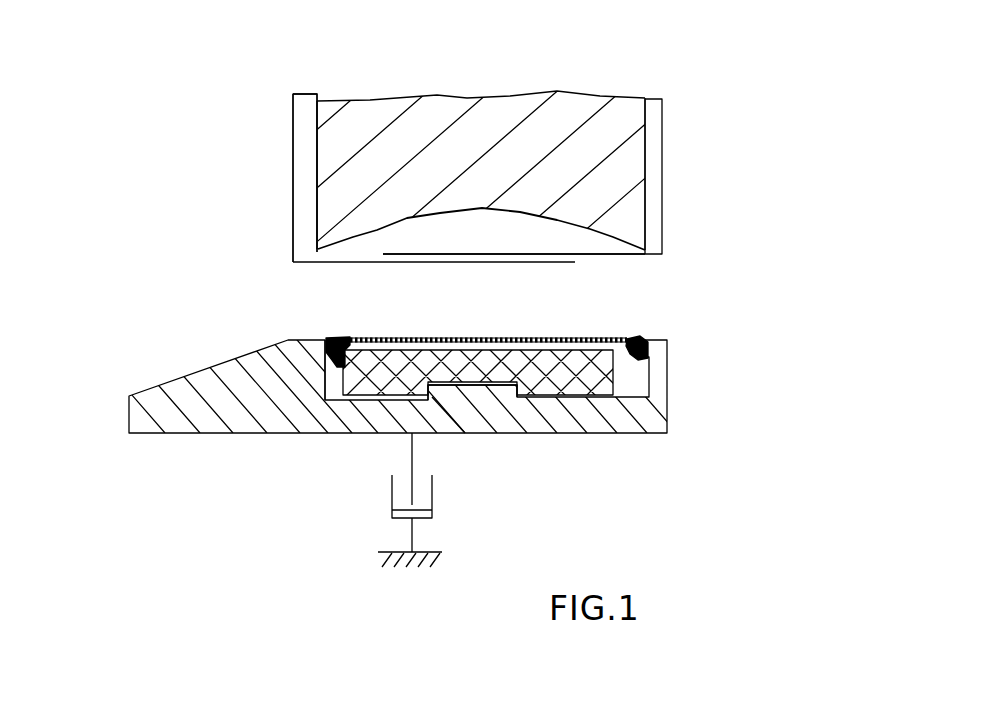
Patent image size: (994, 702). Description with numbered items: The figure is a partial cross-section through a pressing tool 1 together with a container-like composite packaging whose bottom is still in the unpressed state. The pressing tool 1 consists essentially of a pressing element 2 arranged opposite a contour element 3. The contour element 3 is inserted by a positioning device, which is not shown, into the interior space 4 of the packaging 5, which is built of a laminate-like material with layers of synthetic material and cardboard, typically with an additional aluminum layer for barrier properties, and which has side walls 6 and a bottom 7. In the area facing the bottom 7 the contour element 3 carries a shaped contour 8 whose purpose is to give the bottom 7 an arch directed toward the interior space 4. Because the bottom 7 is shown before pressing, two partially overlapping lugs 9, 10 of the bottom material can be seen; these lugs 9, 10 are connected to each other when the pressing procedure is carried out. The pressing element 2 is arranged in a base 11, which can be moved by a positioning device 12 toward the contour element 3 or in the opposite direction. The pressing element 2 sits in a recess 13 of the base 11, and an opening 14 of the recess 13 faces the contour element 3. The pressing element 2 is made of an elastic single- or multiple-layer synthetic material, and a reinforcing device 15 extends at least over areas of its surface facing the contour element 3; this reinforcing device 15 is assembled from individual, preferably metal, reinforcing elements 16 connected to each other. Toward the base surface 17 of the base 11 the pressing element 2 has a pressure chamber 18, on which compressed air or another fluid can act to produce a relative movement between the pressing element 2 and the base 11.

The pressing tool 1 is at (258, 167).
The pressing element 2 is at (650, 396).
The contour element 3 is at (457, 154).
The interior space 4 is at (468, 196).
The packaging 5 is at (662, 187).
The side walls 6 is at (293, 197).
The bottom 7 is at (612, 276).
The shaped contour 8 is at (481, 205).
The lug 9 is at (393, 263).
The lug 10 is at (477, 262).
The base 11 is at (377, 445).
The positioning device 12 is at (433, 507).
The recess 13 is at (335, 400).
The opening 14 is at (355, 338).
The reinforcing device 15 is at (625, 332).
The reinforcing elements 16 is at (552, 335).
The base surface 17 is at (468, 403).
The pressure chamber 18 is at (498, 393).